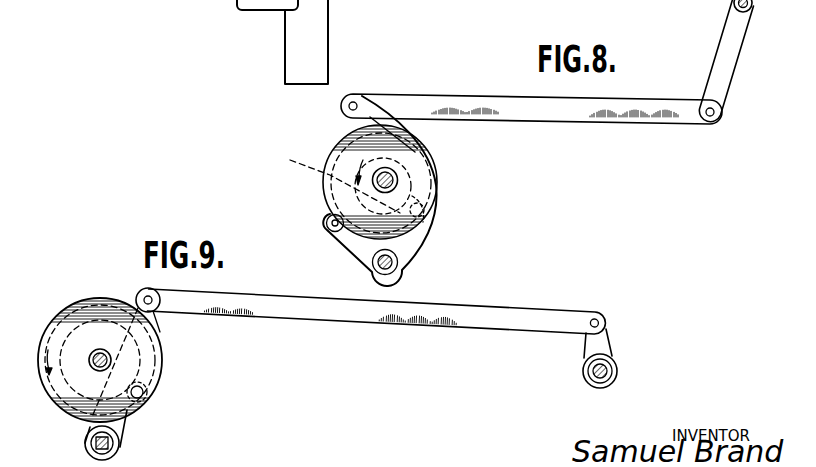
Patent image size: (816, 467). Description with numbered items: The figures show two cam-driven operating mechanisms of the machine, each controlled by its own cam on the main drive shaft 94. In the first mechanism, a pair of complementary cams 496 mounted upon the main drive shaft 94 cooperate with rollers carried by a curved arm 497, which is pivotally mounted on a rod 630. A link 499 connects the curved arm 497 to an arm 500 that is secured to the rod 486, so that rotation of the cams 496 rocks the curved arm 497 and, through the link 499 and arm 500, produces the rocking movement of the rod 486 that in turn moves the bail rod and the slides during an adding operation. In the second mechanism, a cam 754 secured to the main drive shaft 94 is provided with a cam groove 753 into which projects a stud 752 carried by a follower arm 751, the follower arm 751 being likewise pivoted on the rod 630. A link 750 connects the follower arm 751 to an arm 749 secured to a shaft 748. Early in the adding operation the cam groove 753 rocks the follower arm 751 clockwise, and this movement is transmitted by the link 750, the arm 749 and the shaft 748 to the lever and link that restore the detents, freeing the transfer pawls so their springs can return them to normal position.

In FIG. 8, the main drive shaft 94 is at (378, 185).
In FIG. 9, the main drive shaft 94 is at (93, 355).
In FIG. 8, the rod 486 is at (734, 7).
In FIG. 8, the complementary cams 496 is at (350, 153).
In FIG. 8, the curved arm 497 is at (428, 184).
In FIG. 8, the link 499 is at (559, 105).
In FIG. 8, the arm 500 is at (720, 67).
In FIG. 9, the rod 630 is at (120, 445).
In FIG. 9, the shaft 748 is at (607, 370).
In FIG. 9, the arm 749 is at (603, 343).
In FIG. 9, the link 750 is at (498, 315).
In FIG. 9, the follower arm 751 is at (156, 311).
In FIG. 9, the stud 752 is at (146, 390).
In FIG. 9, the cam groove 753 is at (98, 308).
In FIG. 9, the cam 754 is at (163, 372).